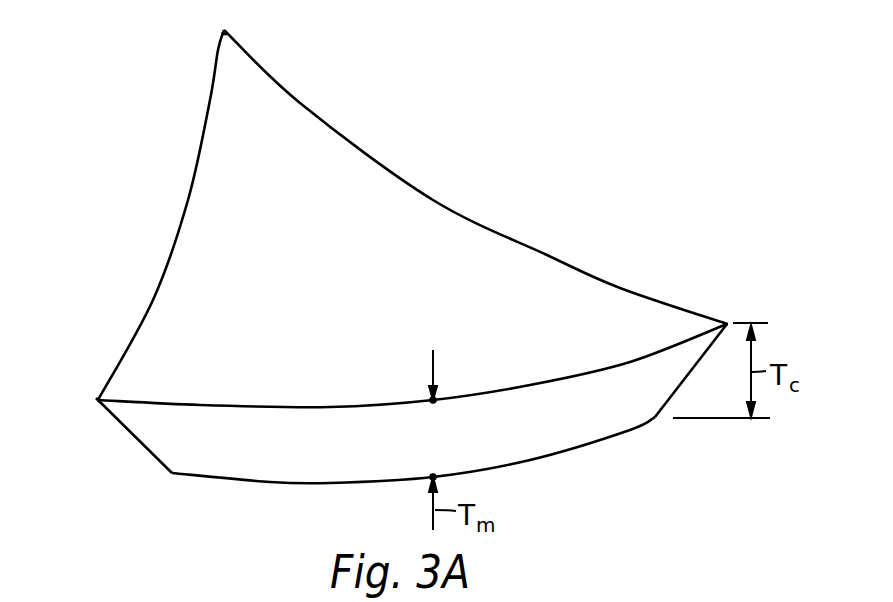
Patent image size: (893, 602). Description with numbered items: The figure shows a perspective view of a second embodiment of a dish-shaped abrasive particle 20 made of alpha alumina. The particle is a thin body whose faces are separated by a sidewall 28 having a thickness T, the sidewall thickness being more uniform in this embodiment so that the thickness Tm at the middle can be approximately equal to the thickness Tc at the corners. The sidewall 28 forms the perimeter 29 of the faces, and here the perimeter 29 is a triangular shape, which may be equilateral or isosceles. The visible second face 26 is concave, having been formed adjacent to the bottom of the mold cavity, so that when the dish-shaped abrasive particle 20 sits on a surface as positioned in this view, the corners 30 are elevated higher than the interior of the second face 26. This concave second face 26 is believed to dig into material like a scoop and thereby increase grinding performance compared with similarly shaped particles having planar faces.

The dish-shaped abrasive particle 20 is at (156, 158).
The second face 26 is at (383, 260).
The sidewall 28 is at (140, 442).
The perimeter 29 is at (547, 254).
The corners 30 is at (225, 31).